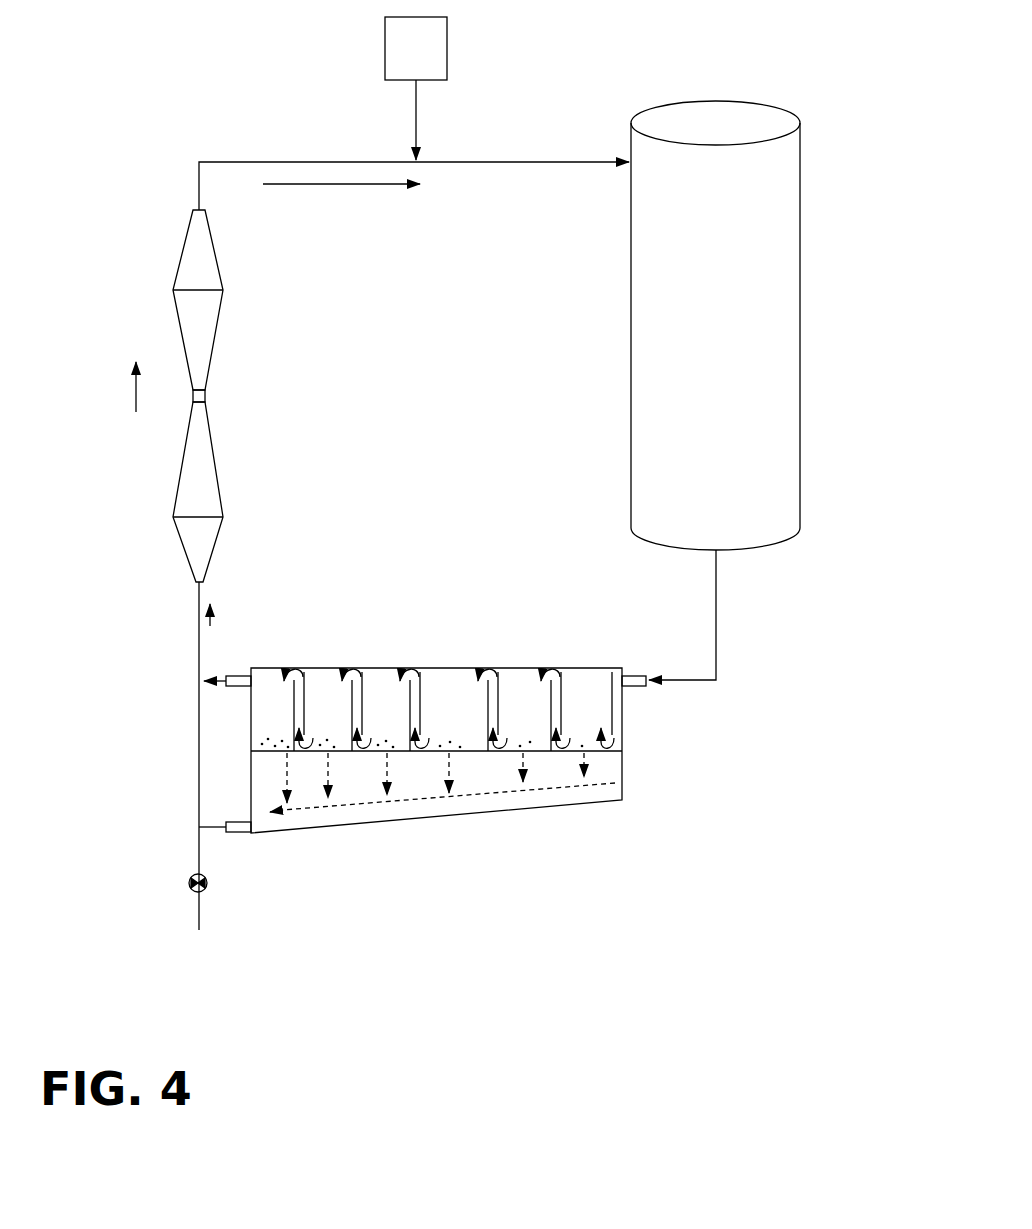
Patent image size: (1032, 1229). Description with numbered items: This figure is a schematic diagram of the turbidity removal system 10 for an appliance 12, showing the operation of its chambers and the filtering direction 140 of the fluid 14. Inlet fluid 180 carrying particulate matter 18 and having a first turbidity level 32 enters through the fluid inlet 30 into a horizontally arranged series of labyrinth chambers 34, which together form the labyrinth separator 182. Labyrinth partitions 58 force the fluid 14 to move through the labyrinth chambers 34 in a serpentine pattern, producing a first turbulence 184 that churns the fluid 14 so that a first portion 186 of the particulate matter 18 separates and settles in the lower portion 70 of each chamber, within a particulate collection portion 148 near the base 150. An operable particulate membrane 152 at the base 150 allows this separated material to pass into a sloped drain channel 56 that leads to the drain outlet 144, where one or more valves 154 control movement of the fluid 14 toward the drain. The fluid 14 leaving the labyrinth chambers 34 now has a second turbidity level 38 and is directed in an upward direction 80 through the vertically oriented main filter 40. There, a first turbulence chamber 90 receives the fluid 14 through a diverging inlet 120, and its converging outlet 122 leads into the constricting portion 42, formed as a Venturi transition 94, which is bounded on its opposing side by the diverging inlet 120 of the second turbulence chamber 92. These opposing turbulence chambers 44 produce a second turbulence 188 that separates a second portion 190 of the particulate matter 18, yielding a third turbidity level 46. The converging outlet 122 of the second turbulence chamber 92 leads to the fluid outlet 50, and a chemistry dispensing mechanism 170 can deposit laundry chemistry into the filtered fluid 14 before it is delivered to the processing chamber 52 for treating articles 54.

The turbidity removal system 10 is at (137, 107).
The appliance 12 is at (772, 282).
The fluid 14 is at (466, 156).
The particulate matter 18 is at (578, 745).
The fluid inlet 30 is at (648, 688).
The first turbidity level 32 is at (734, 615).
The labyrinth chambers 34 is at (419, 733).
The second turbidity level 38 is at (192, 640).
The main filter 40 is at (201, 394).
The constricting portion 42 is at (206, 397).
The opposing turbulence chambers 44 is at (215, 290).
The third turbidity level 46 is at (413, 169).
The fluid outlet 50 is at (193, 210).
The processing chamber 52 is at (767, 270).
The articles 54 is at (737, 484).
The drain channel 56 is at (340, 828).
The labyrinth partitions 58 is at (302, 700).
The lower portion 70 is at (240, 738).
The upward direction 80 is at (132, 392).
The first turbulence chamber 90 is at (215, 470).
The second turbulence chamber 92 is at (213, 248).
The Venturi transition 94 is at (187, 403).
The diverging inlet 120 is at (190, 582).
The converging outlet 122 is at (200, 408).
The filtering direction 140 is at (352, 186).
The drain outlet 144 is at (179, 897).
The particulate collection portion 148 is at (548, 815).
The base 150 is at (622, 750).
The particulate membrane 152 is at (608, 753).
The valves 154 is at (190, 882).
The chemistry dispensing mechanism 170 is at (385, 44).
The inlet fluid 180 is at (728, 643).
The labyrinth separator 182 is at (513, 660).
The first turbulence 184 is at (446, 666).
The first portion 186 is at (490, 795).
The second turbulence 188 is at (195, 498).
The second portion 190 is at (190, 555).